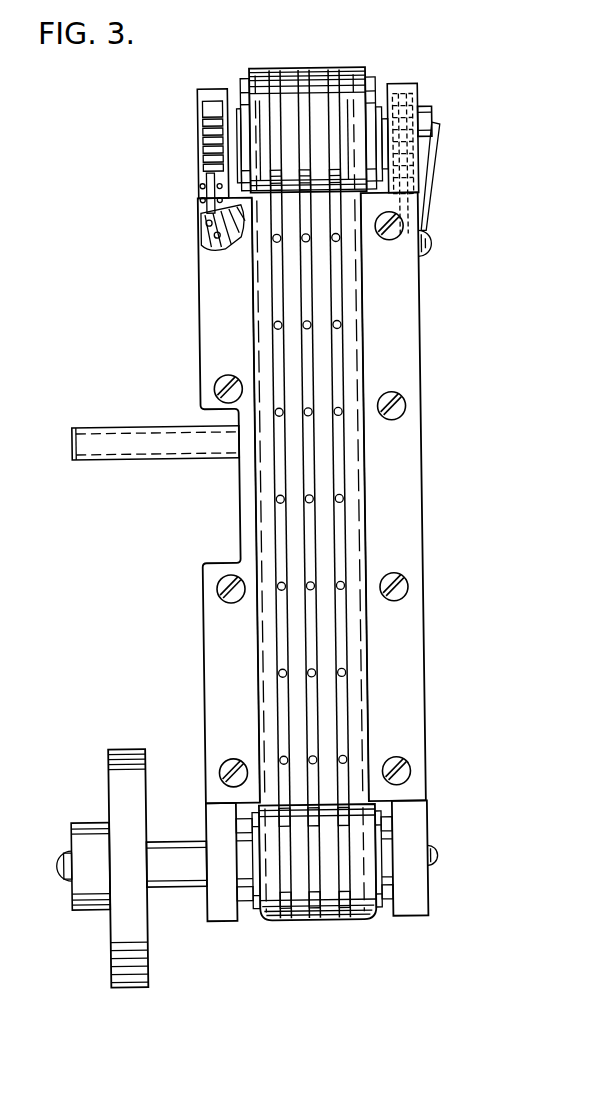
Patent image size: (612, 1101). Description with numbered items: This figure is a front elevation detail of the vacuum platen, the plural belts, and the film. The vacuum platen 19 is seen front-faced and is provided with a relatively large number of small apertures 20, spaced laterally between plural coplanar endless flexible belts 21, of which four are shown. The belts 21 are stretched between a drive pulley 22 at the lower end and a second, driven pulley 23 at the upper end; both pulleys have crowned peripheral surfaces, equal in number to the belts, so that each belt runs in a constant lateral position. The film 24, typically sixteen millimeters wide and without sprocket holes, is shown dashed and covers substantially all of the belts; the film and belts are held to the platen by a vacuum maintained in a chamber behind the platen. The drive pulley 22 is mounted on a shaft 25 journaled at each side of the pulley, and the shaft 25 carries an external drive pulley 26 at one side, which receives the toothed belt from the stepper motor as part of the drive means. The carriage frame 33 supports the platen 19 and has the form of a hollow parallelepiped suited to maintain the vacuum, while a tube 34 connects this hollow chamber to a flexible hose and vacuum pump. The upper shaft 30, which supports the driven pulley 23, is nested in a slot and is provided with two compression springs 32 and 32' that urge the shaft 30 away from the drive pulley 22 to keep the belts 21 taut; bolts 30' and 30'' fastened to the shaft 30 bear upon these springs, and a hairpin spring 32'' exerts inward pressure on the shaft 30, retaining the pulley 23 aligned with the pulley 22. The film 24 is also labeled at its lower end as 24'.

The vacuum platen 19 is at (396, 378).
The apertures 20 is at (312, 242).
The endless flexible belts 21 is at (268, 522).
The drive pulley 22 is at (380, 910).
The second pulley 23 is at (376, 80).
The film 24 is at (300, 110).
The lower drum 24' is at (317, 890).
The shaft 25 is at (168, 852).
The external drive pulley 26 is at (131, 750).
The upper shaft 30 is at (452, 113).
The bolt 30' is at (188, 142).
The bolt 30'' is at (431, 128).
The compression spring 32 is at (198, 185).
The compression spring 32' is at (439, 162).
The hairpin spring 32'' is at (461, 175).
The carriage frame 33 is at (210, 912).
The tube 34 is at (122, 440).